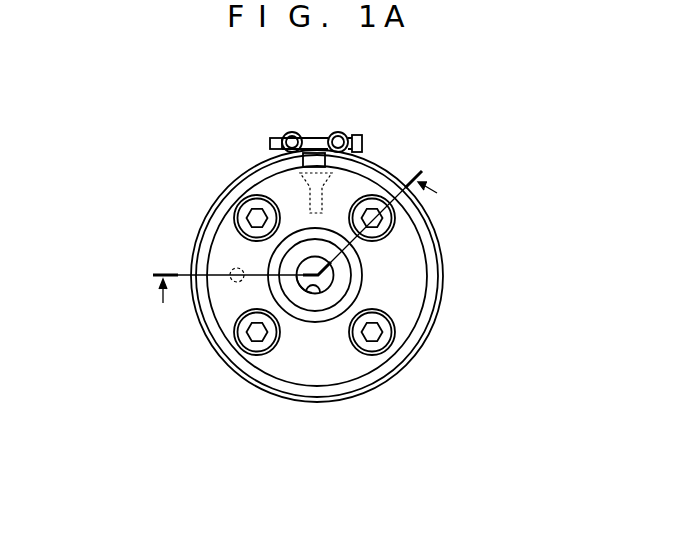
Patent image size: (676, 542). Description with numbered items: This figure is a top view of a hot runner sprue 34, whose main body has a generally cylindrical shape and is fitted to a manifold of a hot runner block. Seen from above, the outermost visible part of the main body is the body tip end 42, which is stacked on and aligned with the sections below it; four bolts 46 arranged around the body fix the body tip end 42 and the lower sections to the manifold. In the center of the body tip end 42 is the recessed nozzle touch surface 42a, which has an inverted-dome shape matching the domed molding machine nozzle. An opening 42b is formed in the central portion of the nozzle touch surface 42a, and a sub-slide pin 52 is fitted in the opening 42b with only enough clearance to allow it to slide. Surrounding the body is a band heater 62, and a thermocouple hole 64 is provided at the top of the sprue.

The hot runner sprue 34 is at (289, 276).
The body tip end 42 is at (213, 227).
The nozzle touch surface 42a is at (293, 291).
The opening 42b is at (317, 289).
The bolts 46 is at (396, 220).
The sub-slide pin 52 is at (352, 273).
The band heater 62 is at (226, 368).
The thermocouple hole 64 is at (307, 192).